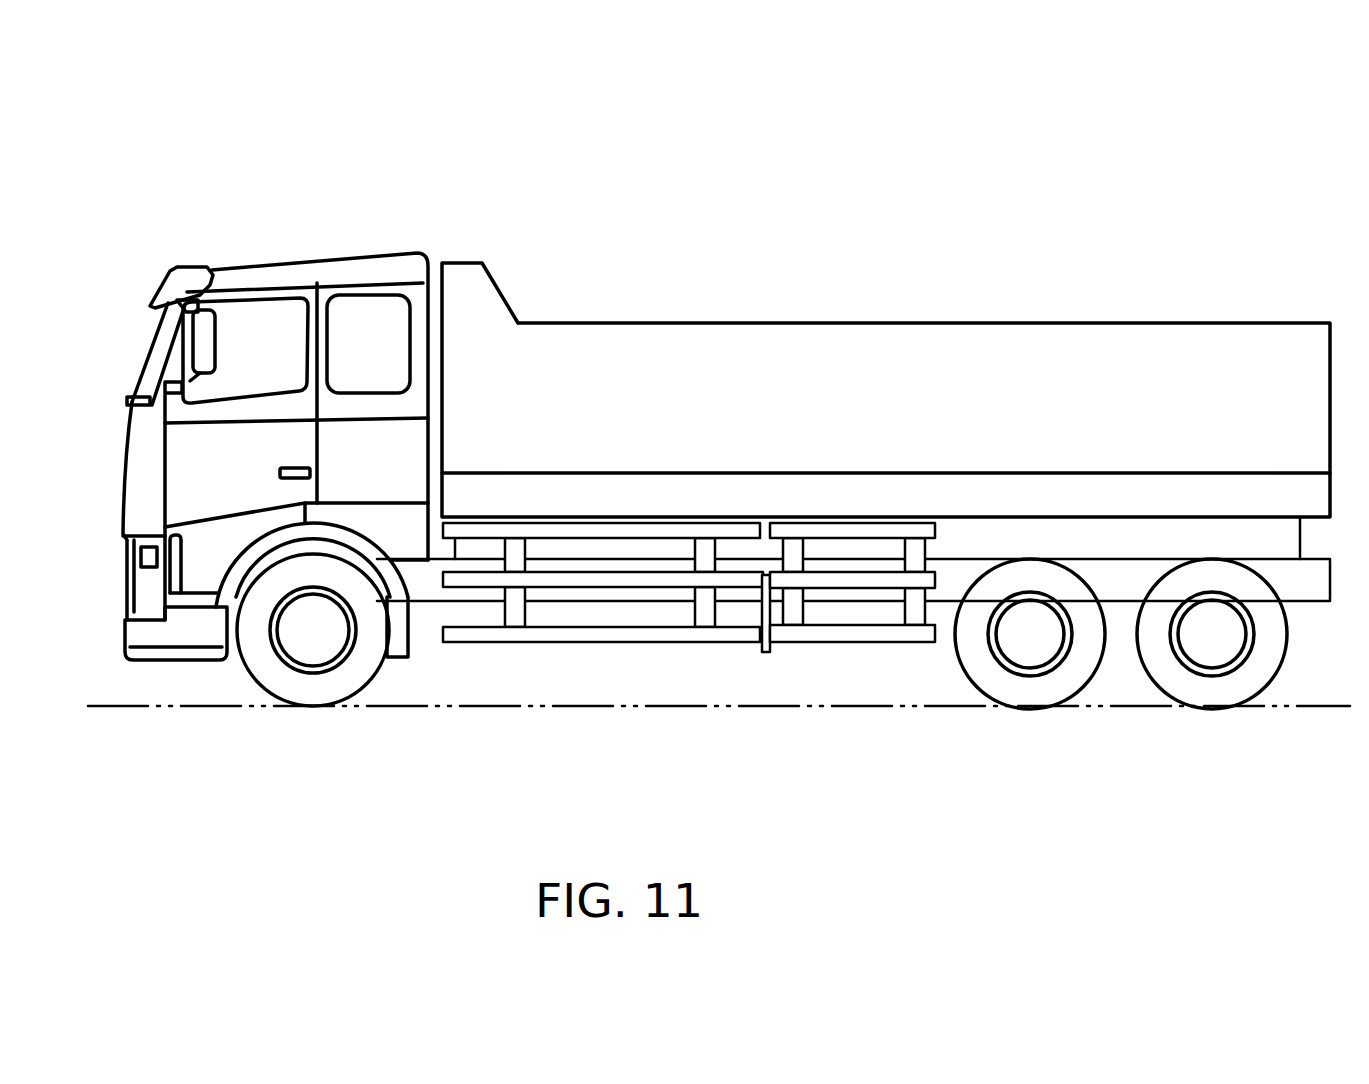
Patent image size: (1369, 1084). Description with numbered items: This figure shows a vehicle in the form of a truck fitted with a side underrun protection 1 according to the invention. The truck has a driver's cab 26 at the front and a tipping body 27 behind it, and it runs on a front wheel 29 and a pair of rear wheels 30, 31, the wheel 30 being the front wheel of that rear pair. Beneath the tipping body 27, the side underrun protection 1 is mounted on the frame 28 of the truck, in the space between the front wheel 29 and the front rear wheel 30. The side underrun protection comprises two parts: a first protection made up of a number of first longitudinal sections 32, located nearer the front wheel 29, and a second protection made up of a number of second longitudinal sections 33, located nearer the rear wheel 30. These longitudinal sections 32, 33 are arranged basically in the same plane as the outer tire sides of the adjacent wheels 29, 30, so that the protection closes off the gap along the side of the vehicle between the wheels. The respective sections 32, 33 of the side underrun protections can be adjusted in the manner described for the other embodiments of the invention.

The side underrun protection 1 is at (861, 726).
The driver's cab 26 is at (338, 203).
The tipping body 27 is at (813, 279).
The frame 28 is at (430, 588).
The front wheel 29 is at (286, 727).
The front wheel of the pair of rear wheels 30 is at (1011, 740).
The rear wheel 31 is at (1181, 740).
The first longitudinal sections 32 is at (645, 530).
The second longitudinal sections 33 is at (890, 532).